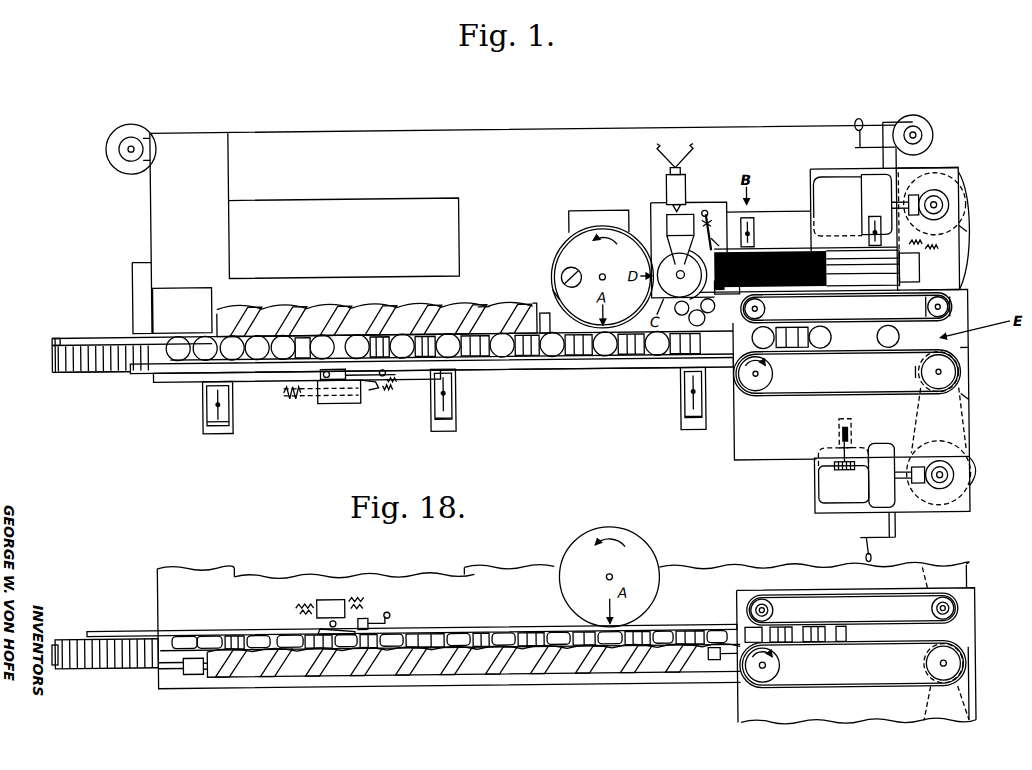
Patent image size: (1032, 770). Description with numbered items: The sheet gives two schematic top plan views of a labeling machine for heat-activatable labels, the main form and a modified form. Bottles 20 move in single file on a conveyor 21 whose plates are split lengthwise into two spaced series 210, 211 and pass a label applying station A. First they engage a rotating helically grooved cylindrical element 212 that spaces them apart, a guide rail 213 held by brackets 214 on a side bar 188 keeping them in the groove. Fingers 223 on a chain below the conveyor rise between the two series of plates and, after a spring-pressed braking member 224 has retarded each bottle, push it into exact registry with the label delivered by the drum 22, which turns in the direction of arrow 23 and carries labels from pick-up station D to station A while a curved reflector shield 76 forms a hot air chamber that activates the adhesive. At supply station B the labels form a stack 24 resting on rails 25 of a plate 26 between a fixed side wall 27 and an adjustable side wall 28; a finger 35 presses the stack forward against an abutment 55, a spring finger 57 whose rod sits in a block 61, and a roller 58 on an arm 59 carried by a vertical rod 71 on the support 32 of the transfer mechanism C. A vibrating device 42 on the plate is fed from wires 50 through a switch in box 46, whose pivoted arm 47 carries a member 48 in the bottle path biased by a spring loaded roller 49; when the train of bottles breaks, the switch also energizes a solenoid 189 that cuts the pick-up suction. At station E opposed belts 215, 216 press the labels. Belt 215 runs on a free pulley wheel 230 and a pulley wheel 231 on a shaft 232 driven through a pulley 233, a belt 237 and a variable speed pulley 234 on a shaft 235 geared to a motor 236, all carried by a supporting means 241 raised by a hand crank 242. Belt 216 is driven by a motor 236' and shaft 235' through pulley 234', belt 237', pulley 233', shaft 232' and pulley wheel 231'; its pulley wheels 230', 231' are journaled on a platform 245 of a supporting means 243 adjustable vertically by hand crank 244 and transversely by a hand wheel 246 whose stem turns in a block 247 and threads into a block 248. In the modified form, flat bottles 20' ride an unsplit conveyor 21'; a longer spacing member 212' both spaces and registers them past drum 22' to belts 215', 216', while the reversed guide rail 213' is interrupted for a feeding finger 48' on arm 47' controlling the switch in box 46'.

In FIG. 1, the bottles 20 is at (449, 320).
In FIG. 1, the conveyor 21 is at (132, 345).
In FIG. 1, the drum 22 is at (592, 270).
In FIG. 1, the arrow 23 is at (605, 258).
In FIG. 1, the stack of labels 24 is at (769, 254).
In FIG. 1, the rails 25 is at (862, 268).
In FIG. 1, the plate 26 is at (762, 220).
In FIG. 1, the side wall 27 is at (838, 295).
In FIG. 1, the side wall 28 is at (797, 251).
In FIG. 1, the support 32 is at (708, 212).
In FIG. 1, the finger 35 is at (832, 270).
In FIG. 1, the vibrating device 42 is at (921, 276).
In FIG. 1, the switch box 46 is at (339, 402).
In FIG. 1, the pivoted arm 47 is at (372, 403).
In FIG. 1, the member 48 is at (318, 397).
In FIG. 1, the spring loaded roller 49 is at (327, 376).
In FIG. 1, the feed wires 50 is at (311, 393).
In FIG. 1, the abutment 55 is at (682, 275).
In FIG. 1, the spring finger 57 is at (730, 246).
In FIG. 1, the roller 58 is at (703, 257).
In FIG. 1, the arm 59 is at (720, 237).
In FIG. 1, the block 61 is at (722, 296).
In FIG. 1, the vertical rod 71 is at (713, 226).
In FIG. 1, the curved reflector shield 76 is at (556, 262).
In FIG. 1, the side bar 188 is at (510, 372).
In FIG. 1, the solenoid 189 is at (688, 183).
In FIG. 1, the series of article carrying plates 210 is at (70, 365).
In FIG. 1, the series of article carrying plates 211 is at (60, 336).
In FIG. 1, the helically grooved cylindrical element 212 is at (383, 309).
In FIG. 1, the guide rail 213 is at (432, 388).
In FIG. 1, the brackets 214 is at (217, 432).
In FIG. 1, the belt 215 is at (846, 308).
In FIG. 1, the belt 216 is at (846, 372).
In FIG. 1, the fingers 223 is at (483, 307).
In FIG. 1, the braking member 224 is at (557, 292).
In FIG. 1, the pulley wheel 230 is at (772, 308).
In FIG. 1, the pulley wheel 231 is at (969, 306).
In FIG. 1, the shaft 232 is at (963, 365).
In FIG. 1, the pulley 233 is at (922, 308).
In FIG. 1, the variable speed pulley wheel 234 is at (982, 230).
In FIG. 1, the shaft 235 is at (946, 189).
In FIG. 1, the motor 236 is at (884, 200).
In FIG. 1, the belt 237 is at (984, 233).
In FIG. 1, the supporting means 241 is at (935, 172).
In FIG. 1, the hand crank 242 is at (866, 124).
In FIG. 1, the supporting means 243 is at (918, 508).
In FIG. 1, the hand crank 244 is at (877, 545).
In FIG. 1, the platform 245 is at (755, 450).
In FIG. 1, the hand wheel 246 is at (833, 470).
In FIG. 1, the block 247 is at (849, 441).
In FIG. 1, the block 248 is at (838, 429).
In FIG. 1, the pulley wheel 230' is at (777, 373).
In FIG. 1, the pulley wheel 231' is at (967, 371).
In FIG. 1, the shaft 232' is at (985, 344).
In FIG. 1, the pulley 233' is at (902, 372).
In FIG. 1, the variable speed pulley 234' is at (995, 471).
In FIG. 1, the shaft 235' is at (955, 484).
In FIG. 1, the motor 236' is at (852, 489).
In FIG. 1, the belt 237' is at (989, 403).
In FIG. 18, the flat bottles 20' is at (450, 672).
In FIG. 18, the conveyor 21' is at (107, 668).
In FIG. 18, the drum 22' is at (601, 576).
In FIG. 18, the switch box 46' is at (329, 600).
In FIG. 18, the arm 47' is at (389, 610).
In FIG. 18, the feeding finger 48' is at (307, 618).
In FIG. 18, the spacing member 212' is at (449, 679).
In FIG. 18, the guide rail 213' is at (413, 624).
In FIG. 18, the belt 215' is at (852, 609).
In FIG. 18, the belt 216' is at (853, 661).